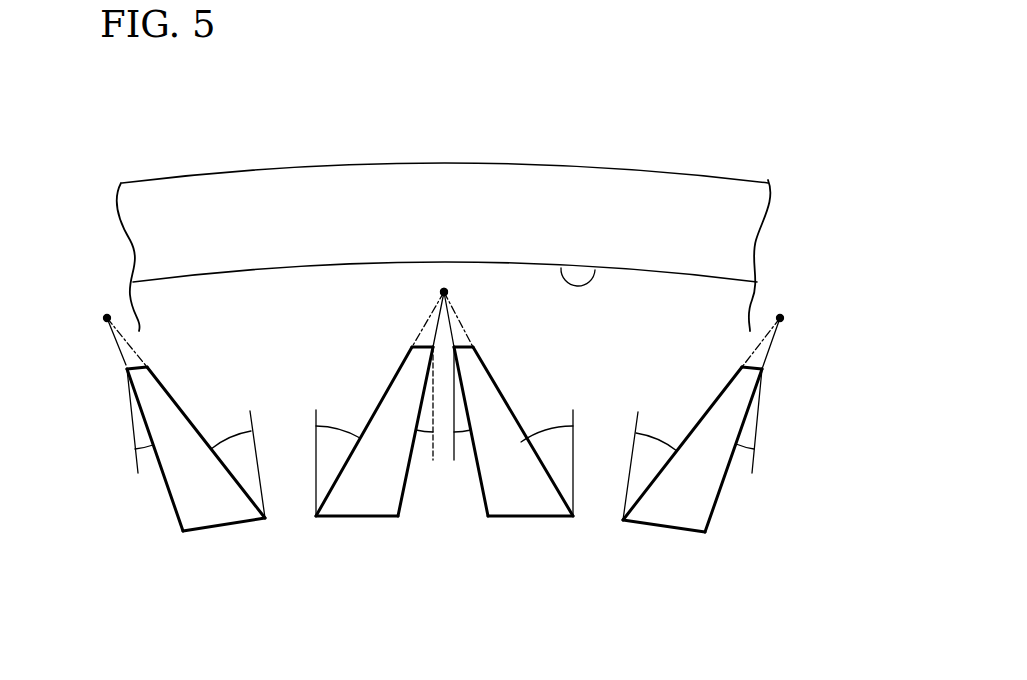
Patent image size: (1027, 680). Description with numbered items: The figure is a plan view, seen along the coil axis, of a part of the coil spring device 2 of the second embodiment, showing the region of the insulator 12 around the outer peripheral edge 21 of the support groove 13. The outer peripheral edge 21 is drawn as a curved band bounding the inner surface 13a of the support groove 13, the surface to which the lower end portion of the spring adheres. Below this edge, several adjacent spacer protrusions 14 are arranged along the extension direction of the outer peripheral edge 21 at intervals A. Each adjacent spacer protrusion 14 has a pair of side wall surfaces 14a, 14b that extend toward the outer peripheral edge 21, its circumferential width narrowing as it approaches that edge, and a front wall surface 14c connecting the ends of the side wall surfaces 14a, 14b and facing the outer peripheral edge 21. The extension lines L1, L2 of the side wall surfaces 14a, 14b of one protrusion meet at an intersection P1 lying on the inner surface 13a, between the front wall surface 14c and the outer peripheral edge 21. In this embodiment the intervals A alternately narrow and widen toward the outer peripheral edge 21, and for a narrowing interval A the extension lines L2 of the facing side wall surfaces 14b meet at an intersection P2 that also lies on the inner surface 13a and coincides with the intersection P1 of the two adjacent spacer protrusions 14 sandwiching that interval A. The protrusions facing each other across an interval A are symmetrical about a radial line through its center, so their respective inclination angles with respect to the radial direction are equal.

The coil spring device 2 is at (759, 133).
The insulator 12 is at (230, 170).
The support groove 13 is at (662, 283).
The inner surface of the support groove 13a is at (677, 298).
The adjacent spacer protrusion 14 is at (441, 458).
The side wall surface 14a is at (172, 398).
The side wall surface 14b is at (178, 519).
The front wall surface 14c is at (130, 369).
The outer peripheral edge 21 is at (561, 266).
The interval A is at (272, 392).
The intersection P1 is at (107, 318).
The intersection P2 is at (444, 292).
The extension line L1 is at (150, 338).
The extension line L2 is at (122, 355).